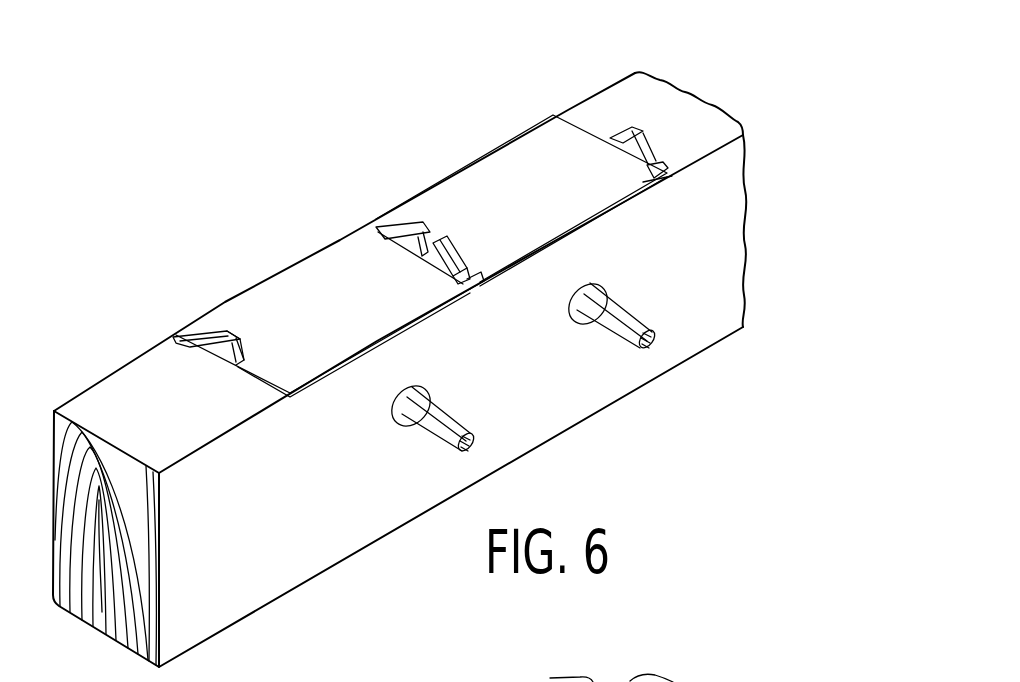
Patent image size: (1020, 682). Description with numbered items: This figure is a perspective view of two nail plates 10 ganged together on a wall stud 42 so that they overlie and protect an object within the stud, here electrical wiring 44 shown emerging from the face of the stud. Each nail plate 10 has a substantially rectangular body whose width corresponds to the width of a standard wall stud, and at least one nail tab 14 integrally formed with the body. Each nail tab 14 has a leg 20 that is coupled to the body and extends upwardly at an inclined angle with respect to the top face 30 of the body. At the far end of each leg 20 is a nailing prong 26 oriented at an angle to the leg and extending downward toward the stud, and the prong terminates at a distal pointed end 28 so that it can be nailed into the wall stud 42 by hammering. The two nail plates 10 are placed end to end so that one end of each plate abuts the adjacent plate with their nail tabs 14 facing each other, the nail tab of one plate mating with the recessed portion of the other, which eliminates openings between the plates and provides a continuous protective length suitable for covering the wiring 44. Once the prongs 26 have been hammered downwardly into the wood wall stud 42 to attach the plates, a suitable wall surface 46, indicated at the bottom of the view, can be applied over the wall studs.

The nail plate 10 is at (234, 286).
The nail tab 14 is at (405, 225).
The leg 20 is at (213, 345).
The nailing prong 26 is at (423, 247).
The distal pointed end 28 is at (233, 358).
The top face 30 is at (310, 268).
The wall stud 42 is at (218, 593).
The electrical wiring 44 is at (431, 428).
The wall surface 46 is at (552, 677).